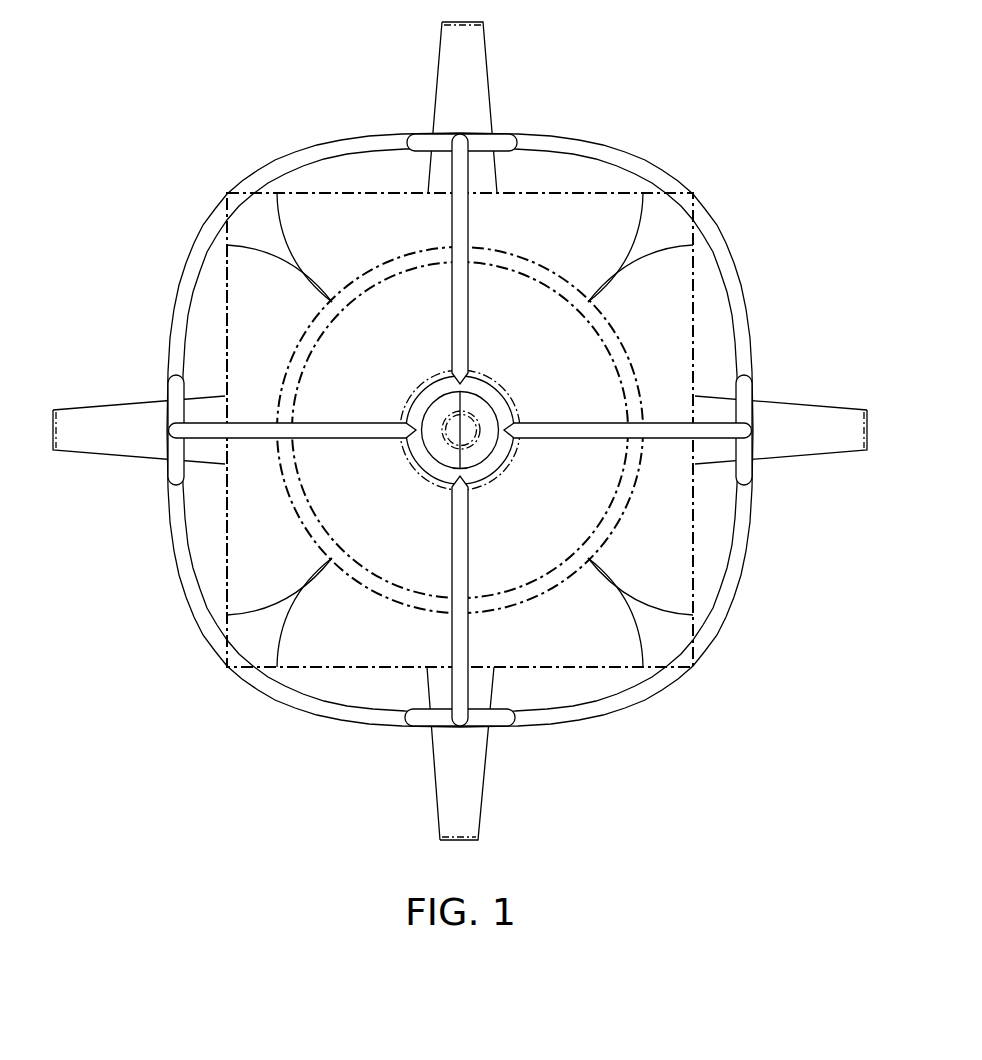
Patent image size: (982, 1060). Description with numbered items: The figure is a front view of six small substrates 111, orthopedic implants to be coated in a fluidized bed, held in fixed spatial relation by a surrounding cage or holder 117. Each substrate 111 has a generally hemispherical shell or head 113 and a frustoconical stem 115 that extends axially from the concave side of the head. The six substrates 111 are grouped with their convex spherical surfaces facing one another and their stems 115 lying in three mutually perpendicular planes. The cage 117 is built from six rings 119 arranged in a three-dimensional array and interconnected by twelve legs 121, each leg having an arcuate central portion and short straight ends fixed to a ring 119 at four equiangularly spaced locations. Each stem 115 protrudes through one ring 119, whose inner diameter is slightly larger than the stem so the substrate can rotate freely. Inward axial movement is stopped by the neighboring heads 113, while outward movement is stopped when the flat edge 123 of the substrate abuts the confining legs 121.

The substrate 111 is at (498, 190).
The hemispherical shell or head 113 is at (357, 237).
The stem 115 is at (468, 78).
The cage or holder 117 is at (615, 140).
The ring 119 is at (173, 468).
The leg 121 is at (234, 196).
The flat edge 123 is at (225, 300).